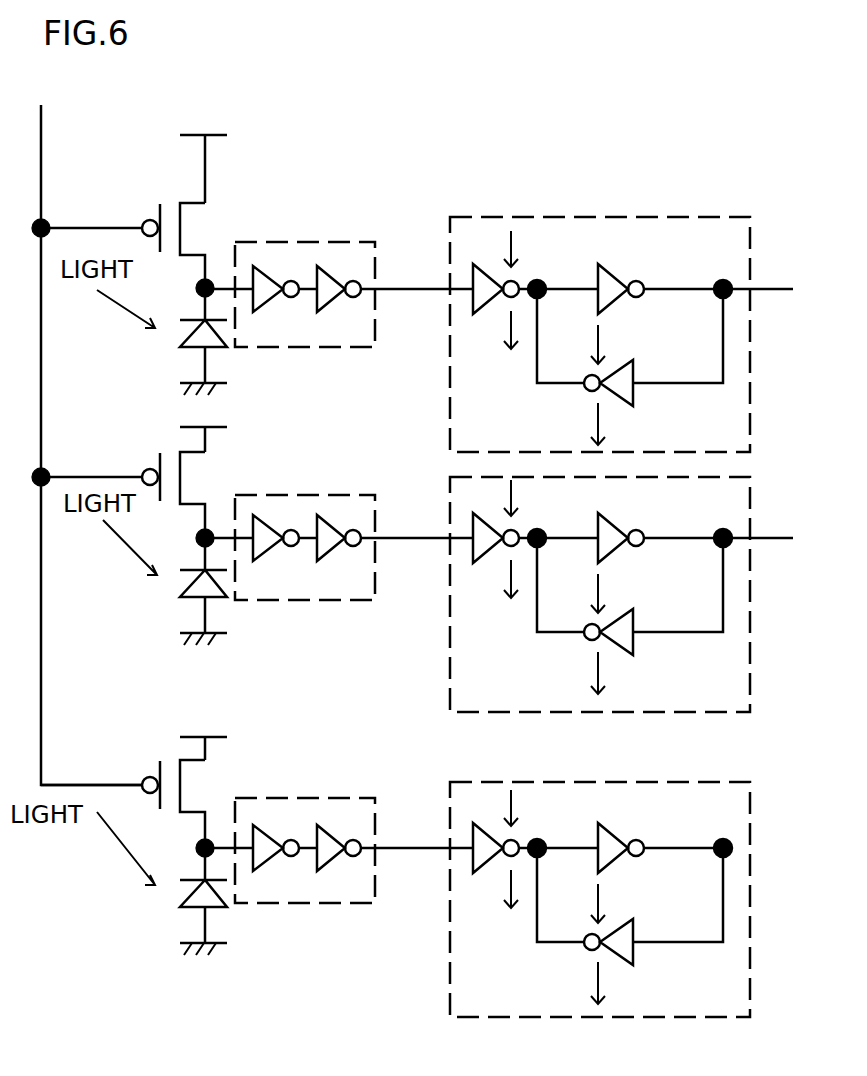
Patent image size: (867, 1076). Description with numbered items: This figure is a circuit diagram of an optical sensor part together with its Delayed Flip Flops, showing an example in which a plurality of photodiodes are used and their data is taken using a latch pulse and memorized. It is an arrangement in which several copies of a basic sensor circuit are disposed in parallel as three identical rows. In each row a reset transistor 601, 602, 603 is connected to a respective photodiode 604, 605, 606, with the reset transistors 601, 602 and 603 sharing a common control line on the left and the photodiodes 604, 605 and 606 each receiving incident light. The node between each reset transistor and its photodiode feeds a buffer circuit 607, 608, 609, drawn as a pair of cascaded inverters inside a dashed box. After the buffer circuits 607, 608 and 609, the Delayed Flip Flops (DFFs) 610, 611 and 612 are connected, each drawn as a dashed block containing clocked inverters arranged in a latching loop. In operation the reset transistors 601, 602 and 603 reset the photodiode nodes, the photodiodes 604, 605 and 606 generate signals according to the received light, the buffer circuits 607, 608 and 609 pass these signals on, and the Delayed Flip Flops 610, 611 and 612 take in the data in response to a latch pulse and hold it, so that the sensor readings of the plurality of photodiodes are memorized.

The reset transistor 601 is at (205, 218).
The reset transistor 602 is at (205, 477).
The reset transistor 603 is at (210, 787).
The photodiode 604 is at (167, 338).
The photodiode 605 is at (175, 592).
The photodiode 606 is at (167, 905).
The buffer circuit 607 is at (285, 322).
The buffer circuit 608 is at (285, 580).
The buffer circuit 609 is at (285, 885).
The Delayed Flip Flop 610 is at (621, 334).
The Delayed Flip Flop 611 is at (621, 594).
The Delayed Flip Flop 612 is at (600, 899).